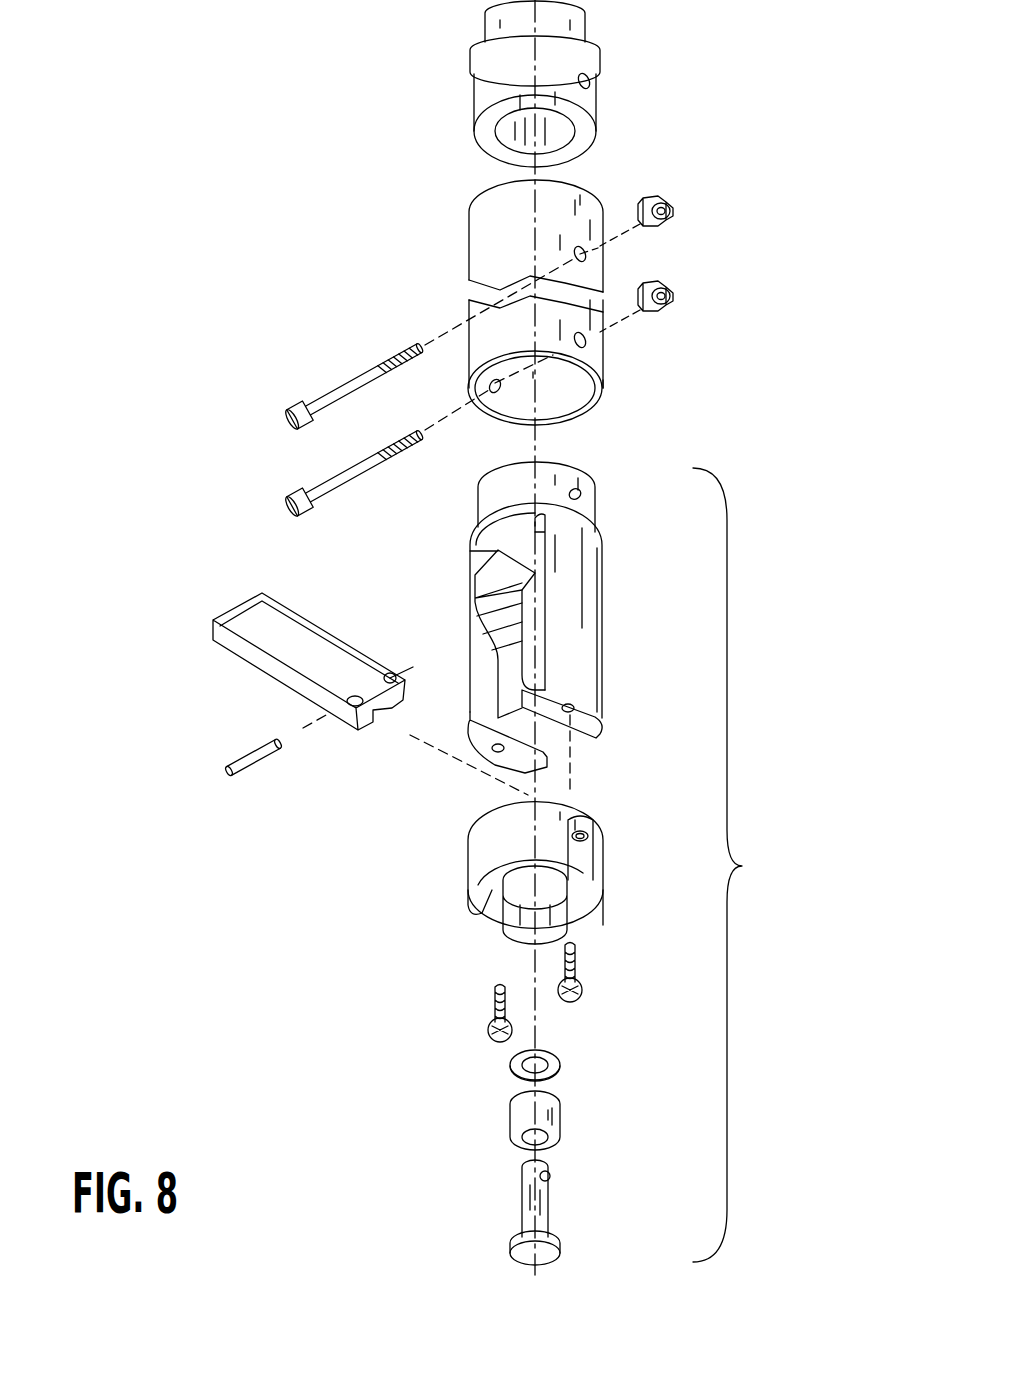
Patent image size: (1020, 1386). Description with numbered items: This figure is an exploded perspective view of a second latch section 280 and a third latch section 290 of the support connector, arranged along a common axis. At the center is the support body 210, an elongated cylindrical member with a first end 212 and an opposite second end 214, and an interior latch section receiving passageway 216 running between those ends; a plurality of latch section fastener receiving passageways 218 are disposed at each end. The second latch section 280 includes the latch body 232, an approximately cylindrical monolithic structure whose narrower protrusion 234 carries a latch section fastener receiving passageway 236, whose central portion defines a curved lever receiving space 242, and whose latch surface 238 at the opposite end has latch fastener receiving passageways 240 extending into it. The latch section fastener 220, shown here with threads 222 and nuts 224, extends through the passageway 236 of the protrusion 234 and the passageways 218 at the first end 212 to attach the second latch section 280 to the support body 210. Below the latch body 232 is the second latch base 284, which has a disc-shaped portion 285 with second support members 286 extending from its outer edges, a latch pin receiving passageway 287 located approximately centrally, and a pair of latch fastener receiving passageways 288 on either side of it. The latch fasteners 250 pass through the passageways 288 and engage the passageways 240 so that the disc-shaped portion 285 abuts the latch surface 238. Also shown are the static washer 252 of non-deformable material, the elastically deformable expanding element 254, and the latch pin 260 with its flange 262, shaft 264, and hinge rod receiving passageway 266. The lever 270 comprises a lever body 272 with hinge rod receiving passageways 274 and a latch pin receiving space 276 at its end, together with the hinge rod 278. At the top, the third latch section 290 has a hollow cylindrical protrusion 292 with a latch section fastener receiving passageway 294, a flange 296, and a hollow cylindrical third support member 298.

The support body 210 is at (472, 244).
The first end 212 is at (605, 388).
The second end 214 is at (588, 186).
The latch section receiving passageway 216 is at (568, 383).
The latch section fastener receiving passageways 218 is at (588, 260).
The latch section fastener 220 is at (290, 417).
The bolt threads 222 is at (343, 386).
The nuts 224 is at (672, 208).
The latch body 232 is at (473, 590).
The protrusion 234 is at (478, 512).
The latch section fastener receiving passageway 236 is at (582, 492).
The latch surface 238 is at (600, 724).
The latch fastener receiving passageways 240 is at (572, 714).
The lever receiving space 242 is at (538, 630).
The latch fasteners 250 is at (495, 990).
The static washer 252 is at (508, 1066).
The expanding element 254 is at (508, 1118).
The latch pin 260 is at (513, 1204).
The flange 262 is at (508, 1252).
The shaft 264 is at (548, 1208).
The hinge rod receiving passageway 266 is at (550, 1176).
The lever 270 is at (313, 668).
The lever body 272 is at (281, 606).
The hinge rod receiving passageways 274 is at (391, 672).
The latch pin receiving space 276 is at (370, 712).
The hinge rod 278 is at (232, 765).
The second latch section 280 is at (744, 866).
The second latch base 284 is at (478, 836).
The disc-shaped portion 285 is at (605, 812).
The second support members 286 is at (480, 897).
The latch pin receiving passageway 287 is at (549, 880).
The latch fastener receiving passageways 288 is at (597, 856).
The third latch section 290 is at (549, 83).
The protrusion 292 is at (476, 120).
The latch section fastener receiving passageway 294 is at (635, 92).
The flange 296 is at (472, 75).
The third support member 298 is at (488, 34).